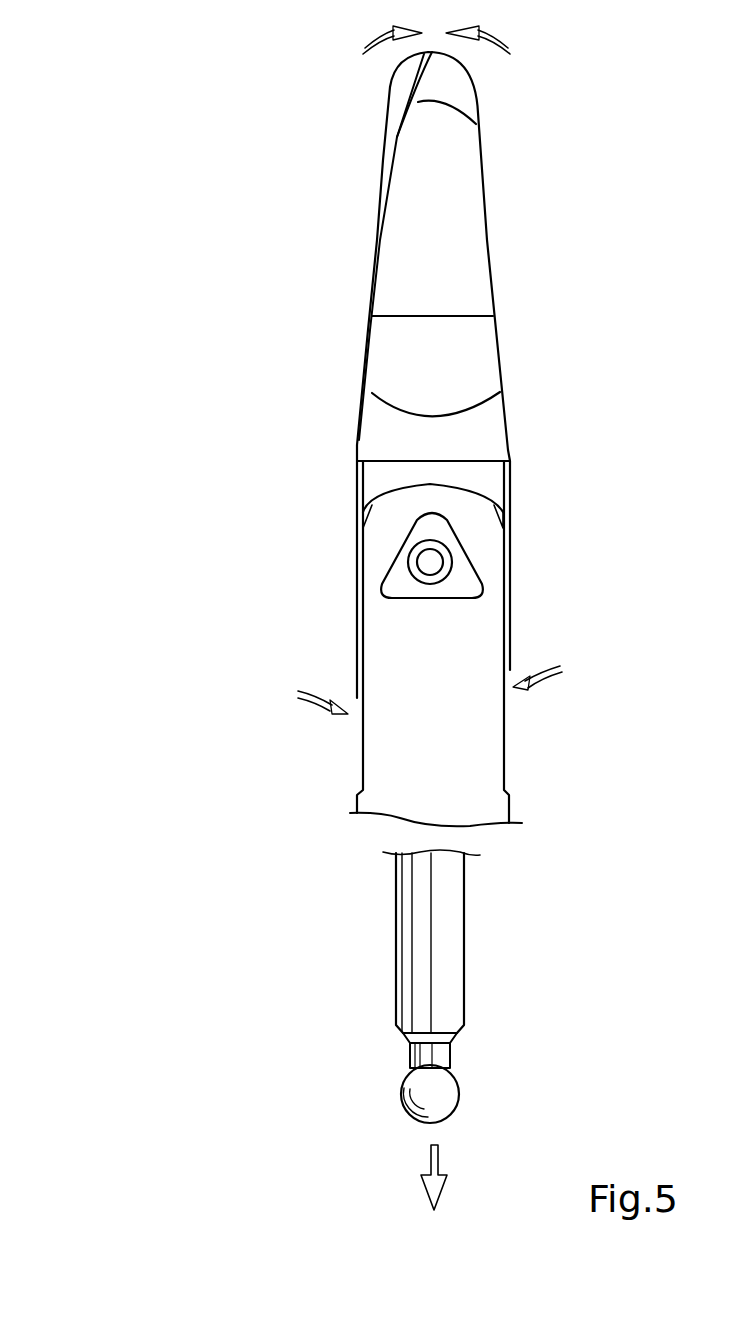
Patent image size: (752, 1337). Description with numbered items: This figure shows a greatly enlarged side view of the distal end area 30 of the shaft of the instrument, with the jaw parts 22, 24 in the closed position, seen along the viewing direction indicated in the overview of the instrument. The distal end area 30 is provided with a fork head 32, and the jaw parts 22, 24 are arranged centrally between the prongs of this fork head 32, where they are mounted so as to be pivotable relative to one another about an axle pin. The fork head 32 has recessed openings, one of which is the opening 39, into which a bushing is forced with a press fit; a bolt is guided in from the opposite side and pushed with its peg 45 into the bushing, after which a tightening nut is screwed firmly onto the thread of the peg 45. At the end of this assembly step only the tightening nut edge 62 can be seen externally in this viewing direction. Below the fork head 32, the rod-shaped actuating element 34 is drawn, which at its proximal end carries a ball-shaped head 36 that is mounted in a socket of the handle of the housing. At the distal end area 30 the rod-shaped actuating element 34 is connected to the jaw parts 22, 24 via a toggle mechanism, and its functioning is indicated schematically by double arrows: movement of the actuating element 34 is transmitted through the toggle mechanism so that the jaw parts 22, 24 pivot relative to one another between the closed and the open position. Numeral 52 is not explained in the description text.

The distal end area 30 is at (268, 400).
The jaw part 22 is at (458, 264).
The jaw part 24 is at (400, 90).
The fork head 32 is at (447, 762).
The rod-shaped actuating element 34 is at (448, 935).
The ball-shaped head 36 is at (450, 1088).
The opening 39 is at (410, 540).
The peg 45 is at (428, 563).
The cam element 52 is at (470, 584).
The tightening nut edge 62 is at (450, 558).